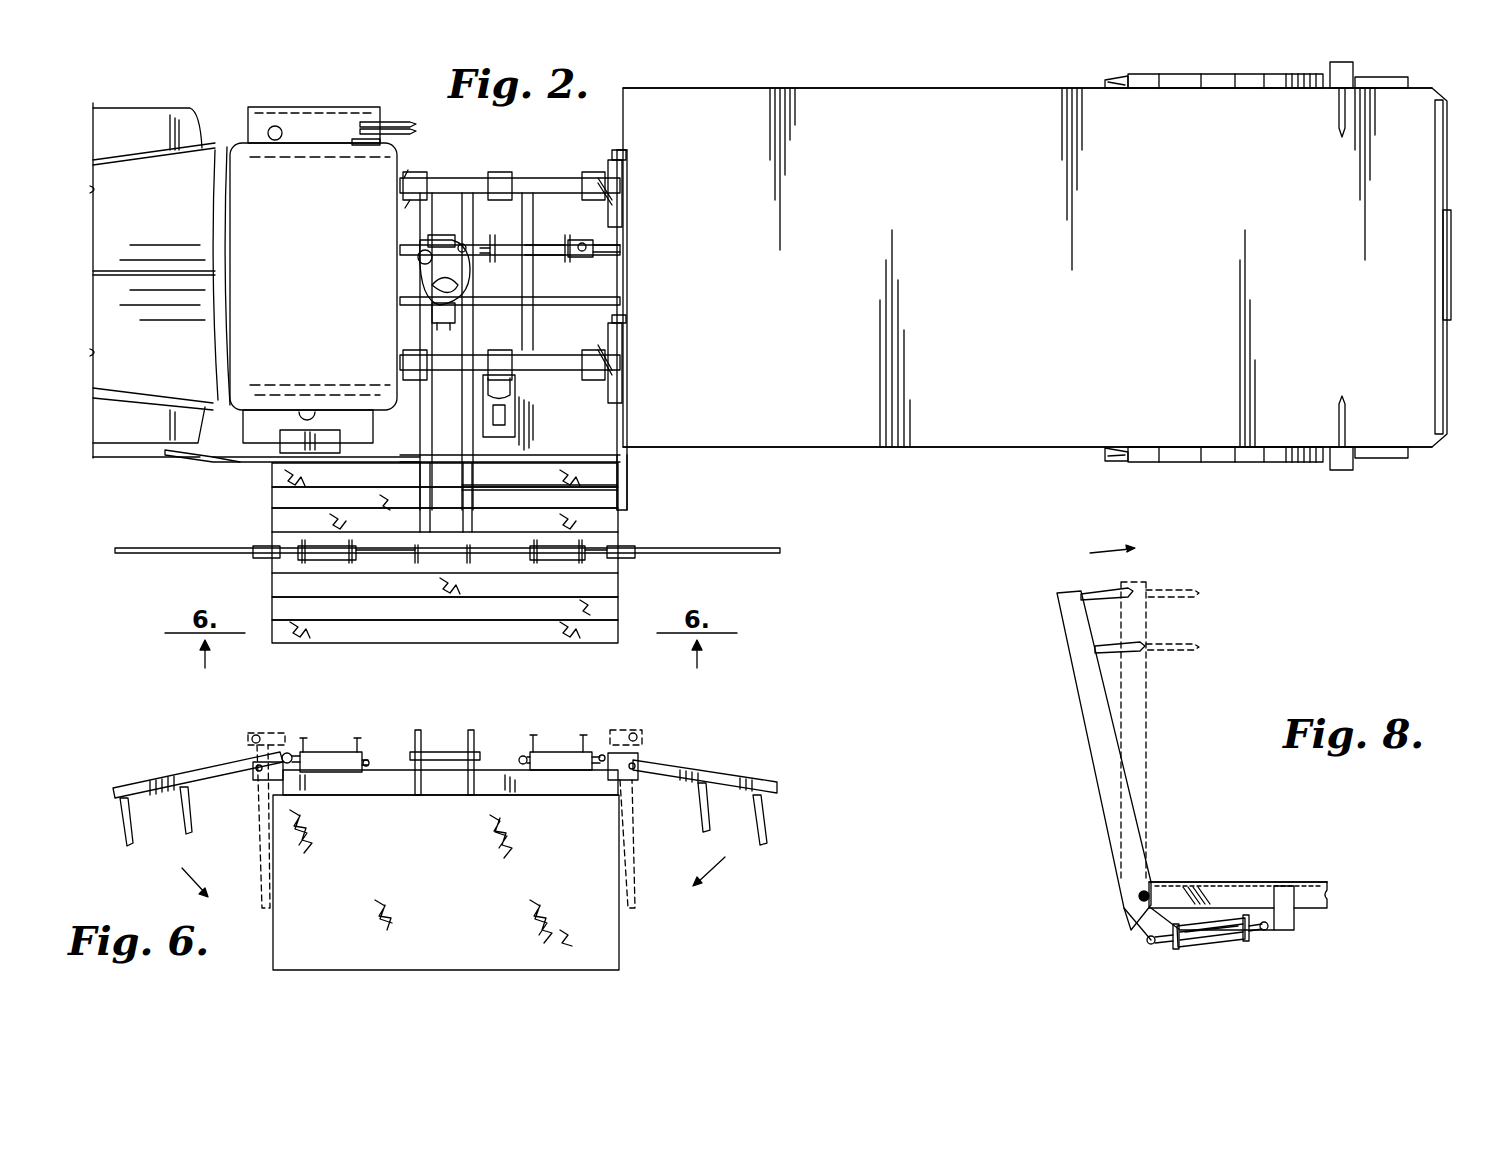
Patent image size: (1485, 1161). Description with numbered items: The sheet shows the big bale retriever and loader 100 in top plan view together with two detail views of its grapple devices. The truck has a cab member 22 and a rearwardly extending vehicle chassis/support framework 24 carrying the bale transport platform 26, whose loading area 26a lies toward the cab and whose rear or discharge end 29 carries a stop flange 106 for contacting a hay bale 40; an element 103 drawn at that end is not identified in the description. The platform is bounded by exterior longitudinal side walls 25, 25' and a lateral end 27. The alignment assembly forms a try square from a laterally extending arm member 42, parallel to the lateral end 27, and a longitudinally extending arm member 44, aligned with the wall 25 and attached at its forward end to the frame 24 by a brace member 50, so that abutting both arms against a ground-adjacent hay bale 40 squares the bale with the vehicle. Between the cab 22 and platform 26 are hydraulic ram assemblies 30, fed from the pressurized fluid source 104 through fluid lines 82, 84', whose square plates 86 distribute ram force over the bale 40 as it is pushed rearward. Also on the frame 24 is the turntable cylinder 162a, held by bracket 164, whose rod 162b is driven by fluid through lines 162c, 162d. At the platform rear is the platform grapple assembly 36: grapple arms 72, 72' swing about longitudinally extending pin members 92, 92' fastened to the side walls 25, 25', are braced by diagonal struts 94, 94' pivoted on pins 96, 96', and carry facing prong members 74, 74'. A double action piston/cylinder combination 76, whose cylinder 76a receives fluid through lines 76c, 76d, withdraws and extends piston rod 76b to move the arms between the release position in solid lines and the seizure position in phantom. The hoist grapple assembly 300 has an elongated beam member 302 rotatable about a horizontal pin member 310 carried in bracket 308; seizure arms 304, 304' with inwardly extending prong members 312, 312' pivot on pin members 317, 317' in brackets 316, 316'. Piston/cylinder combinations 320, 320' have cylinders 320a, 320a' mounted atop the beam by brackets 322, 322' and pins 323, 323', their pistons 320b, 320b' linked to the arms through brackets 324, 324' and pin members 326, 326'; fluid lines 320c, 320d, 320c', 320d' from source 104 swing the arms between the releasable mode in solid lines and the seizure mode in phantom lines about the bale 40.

In FIG. 2, the cab member 22 is at (100, 306).
In FIG. 2, the pressurized fluid source 104 is at (345, 110).
In FIG. 2, the brace member 50 is at (205, 455).
In FIG. 2, the longitudinally extending arm member 44 is at (240, 466).
In FIG. 2, the vehicle chassis/support framework 24 is at (560, 300).
In FIG. 2, the laterally extending arm member 42 is at (628, 490).
In FIG. 2, the hydraulic ram assemblies 30 is at (540, 178).
In FIG. 2, the clamp 84' is at (427, 175).
In FIG. 2, the fluid line 82 is at (600, 175).
In FIG. 2, the square plate 86 is at (622, 150).
In FIG. 2, the cylinder 162a is at (550, 258).
In FIG. 2, the rod 162b is at (490, 258).
In FIG. 2, the fluid line 162c is at (500, 240).
In FIG. 2, the fluid line 162d is at (565, 240).
In FIG. 2, the bracket 164 is at (598, 258).
In FIG. 2, the lateral end of transport platform 27 is at (617, 115).
In FIG. 2, the bale transport platform 26 is at (1002, 112).
In FIG. 8, the bale transport platform 26 is at (1222, 864).
In FIG. 2, the loading area 26a is at (681, 290).
In FIG. 2, the rear or discharge end 29 is at (1328, 290).
In FIG. 2, the exterior longitudinal wall 25 is at (1027, 465).
In FIG. 8, the exterior longitudinal wall 25 is at (1238, 870).
In FIG. 2, the exterior longitudinal side wall 25' is at (1027, 76).
In FIG. 2, the diagonal strut 94 is at (1225, 469).
In FIG. 2, the diagonal strut 94' is at (1225, 64).
In FIG. 2, the pin 96 is at (1115, 468).
In FIG. 2, the rail end 96' is at (1105, 63).
In FIG. 2, the grapple arm 72 is at (1335, 472).
In FIG. 8, the grapple arm 72 is at (1089, 761).
In FIG. 2, the grapple arm 72' is at (1362, 64).
In FIG. 2, the pin member 92 is at (1386, 464).
In FIG. 8, the pin member 92 is at (1111, 889).
In FIG. 2, the pivot 92' is at (1398, 69).
In FIG. 2, the prong member 74 is at (1364, 421).
In FIG. 8, the prong member 74 is at (1140, 620).
In FIG. 2, the prong member 74' is at (1314, 118).
In FIG. 2, the rear gate 103 is at (1450, 310).
In FIG. 2, the stop flange 106 is at (1435, 368).
In FIG. 2, the big bale retriever and loader 100 is at (852, 508).
In FIG. 2, the hay bale 40 is at (483, 636).
In FIG. 6, the hay bale 40 is at (446, 882).
In FIG. 2, the grapple assembly 300 is at (678, 537).
In FIG. 6, the grapple assembly 300 is at (507, 720).
In FIG. 2, the fluid line 320c is at (316, 537).
In FIG. 2, the fluid line 320c' is at (531, 537).
In FIG. 2, the fluid line 320d is at (385, 540).
In FIG. 2, the fluid line 320d' is at (625, 535).
In FIG. 6, the elongated beam member 302 is at (498, 786).
In FIG. 6, the bracket 308 is at (415, 790).
In FIG. 6, the horizontal pin member 310 is at (445, 752).
In FIG. 6, the seizure arm 304 is at (198, 772).
In FIG. 6, the seizure arm 304' is at (705, 770).
In FIG. 6, the prong member 312 is at (156, 816).
In FIG. 6, the prong member 312' is at (732, 814).
In FIG. 6, the bracket 316 is at (247, 794).
In FIG. 6, the bracket 316' is at (601, 784).
In FIG. 6, the pin member 317 is at (233, 784).
In FIG. 6, the pin member 317' is at (659, 752).
In FIG. 6, the piston/cylinder combination 320 is at (339, 699).
In FIG. 6, the piston/cylinder combination 320' is at (599, 694).
In FIG. 6, the cylinder 320a is at (331, 744).
In FIG. 6, the cylinder 320a' is at (557, 739).
In FIG. 6, the piston rod 320b is at (325, 784).
In FIG. 6, the piston rod 320b' is at (605, 735).
In FIG. 6, the bracket 322 is at (385, 748).
In FIG. 6, the bracket 322' is at (505, 743).
In FIG. 6, the pin 323 is at (377, 777).
In FIG. 6, the pin 323' is at (556, 774).
In FIG. 6, the bracket 324 is at (262, 799).
In FIG. 6, the bracket 324' is at (657, 811).
In FIG. 6, the pin member 326 is at (230, 725).
In FIG. 6, the pin member 326' is at (654, 719).
In FIG. 8, the platform grapple assembly 36 is at (1250, 615).
In FIG. 8, the double action piston/cylinder combination 76 is at (1275, 950).
In FIG. 8, the cylinder 76a is at (1222, 940).
In FIG. 8, the piston rod 76b is at (1172, 948).
In FIG. 8, the fluid line 76c is at (1248, 942).
In FIG. 8, the fluid line 76d is at (1192, 948).